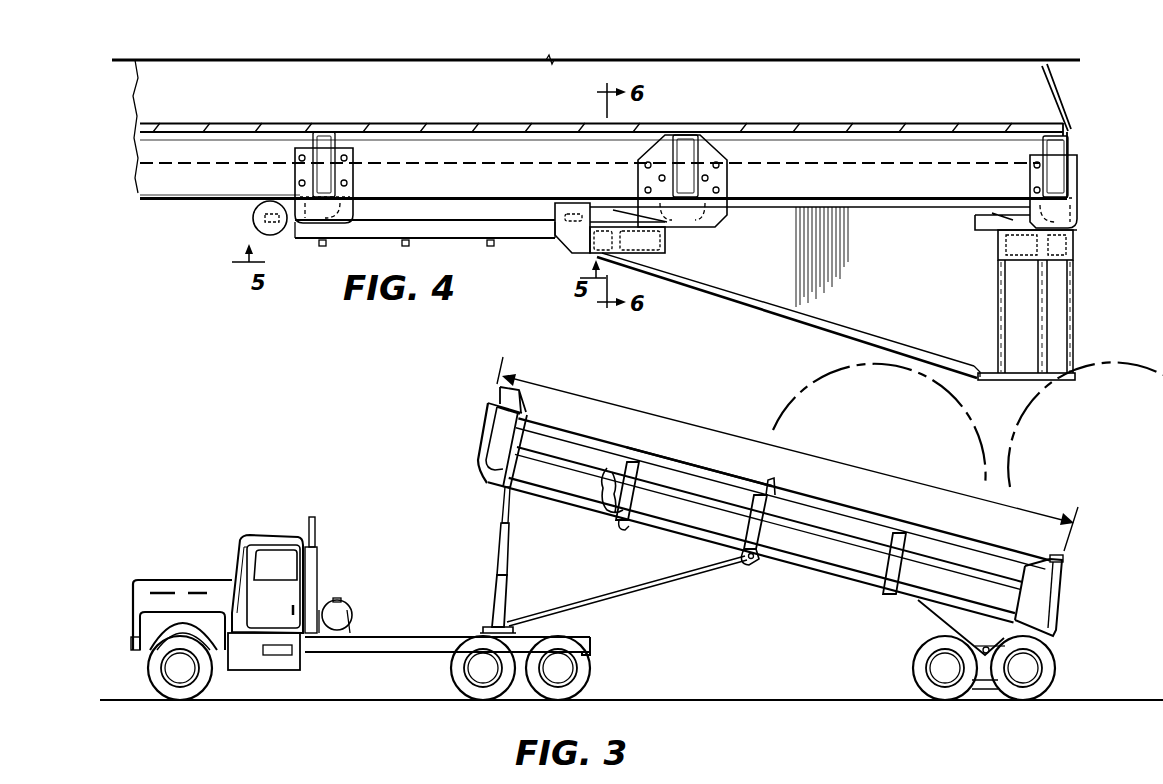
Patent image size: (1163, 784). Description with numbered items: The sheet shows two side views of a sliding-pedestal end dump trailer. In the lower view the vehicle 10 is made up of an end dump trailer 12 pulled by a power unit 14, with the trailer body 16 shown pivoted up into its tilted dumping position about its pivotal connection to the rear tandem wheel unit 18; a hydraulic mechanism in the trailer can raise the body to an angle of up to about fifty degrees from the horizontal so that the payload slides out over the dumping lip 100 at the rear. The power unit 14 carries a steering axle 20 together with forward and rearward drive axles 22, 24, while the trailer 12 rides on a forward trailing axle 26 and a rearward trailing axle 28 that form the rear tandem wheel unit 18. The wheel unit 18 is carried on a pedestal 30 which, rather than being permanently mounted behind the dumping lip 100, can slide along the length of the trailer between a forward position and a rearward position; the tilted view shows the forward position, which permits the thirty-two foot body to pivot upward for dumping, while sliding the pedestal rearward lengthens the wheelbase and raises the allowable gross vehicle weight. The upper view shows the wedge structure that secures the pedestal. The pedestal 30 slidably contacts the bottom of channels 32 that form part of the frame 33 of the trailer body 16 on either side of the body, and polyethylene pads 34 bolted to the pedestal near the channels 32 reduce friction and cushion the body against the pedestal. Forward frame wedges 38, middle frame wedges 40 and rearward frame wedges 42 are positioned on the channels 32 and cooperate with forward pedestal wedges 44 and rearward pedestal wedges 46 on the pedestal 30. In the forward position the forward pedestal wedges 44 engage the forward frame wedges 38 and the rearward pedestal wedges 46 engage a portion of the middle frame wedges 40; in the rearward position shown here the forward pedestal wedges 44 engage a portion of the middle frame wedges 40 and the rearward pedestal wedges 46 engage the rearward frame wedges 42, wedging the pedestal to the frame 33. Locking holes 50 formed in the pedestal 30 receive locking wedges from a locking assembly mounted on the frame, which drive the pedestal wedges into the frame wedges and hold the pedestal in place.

In FIG. 3, the vehicle 10 is at (401, 573).
In FIG. 3, the end dump trailer 12 is at (479, 442).
In FIG. 3, the power unit 14 is at (180, 570).
In FIG. 3, the trailer body 16 is at (664, 460).
In FIG. 3, the rear tandem wheel unit 18 is at (912, 652).
In FIG. 3, the steering axle 20 is at (165, 669).
In FIG. 3, the forward drive axle 22 is at (470, 670).
In FIG. 3, the rearward drive axle 24 is at (563, 671).
In FIG. 3, the forward trailing axle 26 is at (938, 671).
In FIG. 3, the rearward trailing axle 28 is at (1030, 675).
In FIG. 4, the pedestal 30 is at (755, 316).
In FIG. 4, the channels 32 is at (356, 123).
In FIG. 4, the frame 33 is at (128, 183).
In FIG. 3, the frame 33 is at (620, 512).
In FIG. 4, the polyethylene pads 34 is at (836, 206).
In FIG. 4, the forward frame wedges 38 is at (360, 196).
In FIG. 4, the middle frame wedges 40 is at (690, 225).
In FIG. 4, the rearward frame wedges 42 is at (1082, 216).
In FIG. 4, the forward pedestal wedges 44 is at (622, 210).
In FIG. 4, the rearward pedestal wedges 46 is at (1012, 207).
In FIG. 4, the locking holes 50 is at (255, 218).
In FIG. 3, the dumping lip 100 is at (1058, 631).